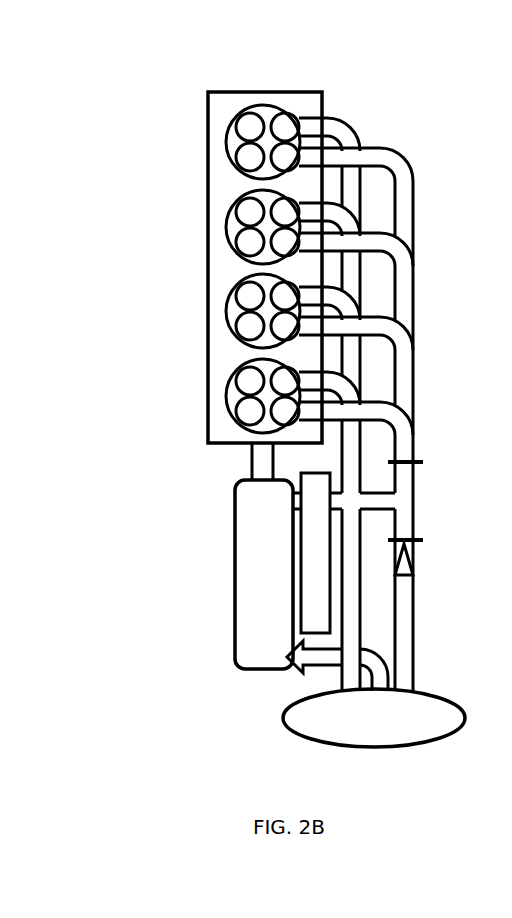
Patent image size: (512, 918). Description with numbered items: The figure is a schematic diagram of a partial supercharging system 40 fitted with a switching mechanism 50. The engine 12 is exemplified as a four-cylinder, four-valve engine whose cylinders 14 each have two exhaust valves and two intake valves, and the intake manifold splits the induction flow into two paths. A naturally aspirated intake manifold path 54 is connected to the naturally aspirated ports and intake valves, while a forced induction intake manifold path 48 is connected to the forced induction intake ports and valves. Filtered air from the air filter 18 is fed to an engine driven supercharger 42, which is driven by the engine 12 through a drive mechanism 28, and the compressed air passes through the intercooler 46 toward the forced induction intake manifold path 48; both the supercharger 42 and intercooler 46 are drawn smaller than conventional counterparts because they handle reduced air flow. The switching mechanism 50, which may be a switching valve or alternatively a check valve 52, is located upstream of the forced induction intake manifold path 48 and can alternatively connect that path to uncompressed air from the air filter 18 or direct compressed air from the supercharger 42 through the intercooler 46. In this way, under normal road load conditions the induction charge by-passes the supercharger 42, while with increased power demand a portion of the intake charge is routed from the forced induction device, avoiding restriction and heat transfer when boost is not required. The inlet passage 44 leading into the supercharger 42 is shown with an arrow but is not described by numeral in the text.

The engine 12 is at (207, 130).
The cylinders 14 is at (265, 100).
The air filter 18 is at (452, 680).
The drive mechanism 28 is at (252, 462).
The partial supercharging system 40 is at (462, 74).
The supercharger 42 is at (235, 575).
The air inlet passage 44 is at (330, 653).
The intercooler 46 is at (302, 518).
The forced induction intake manifold path 48 is at (415, 318).
The switching mechanism 50 is at (415, 498).
The check valve 52 is at (413, 557).
The naturally aspirated intake manifold path 54 is at (350, 122).